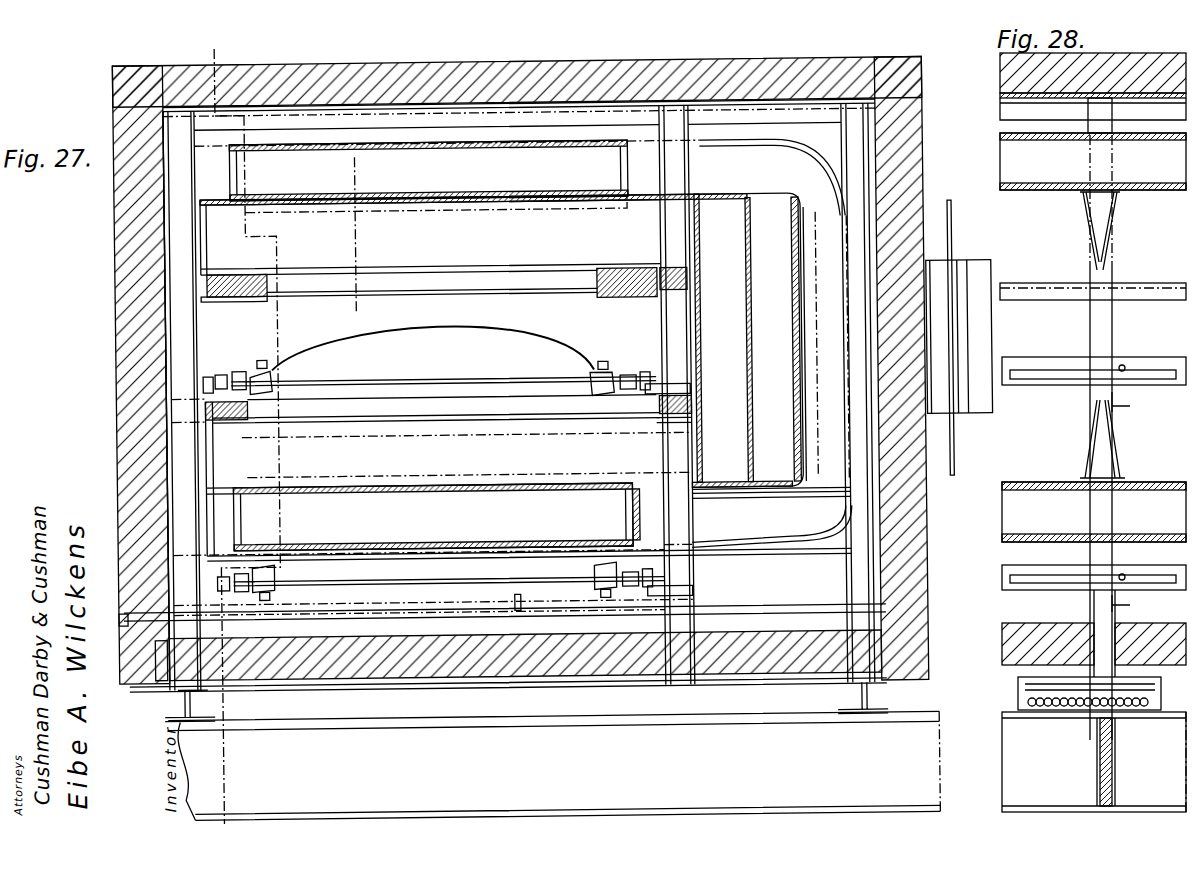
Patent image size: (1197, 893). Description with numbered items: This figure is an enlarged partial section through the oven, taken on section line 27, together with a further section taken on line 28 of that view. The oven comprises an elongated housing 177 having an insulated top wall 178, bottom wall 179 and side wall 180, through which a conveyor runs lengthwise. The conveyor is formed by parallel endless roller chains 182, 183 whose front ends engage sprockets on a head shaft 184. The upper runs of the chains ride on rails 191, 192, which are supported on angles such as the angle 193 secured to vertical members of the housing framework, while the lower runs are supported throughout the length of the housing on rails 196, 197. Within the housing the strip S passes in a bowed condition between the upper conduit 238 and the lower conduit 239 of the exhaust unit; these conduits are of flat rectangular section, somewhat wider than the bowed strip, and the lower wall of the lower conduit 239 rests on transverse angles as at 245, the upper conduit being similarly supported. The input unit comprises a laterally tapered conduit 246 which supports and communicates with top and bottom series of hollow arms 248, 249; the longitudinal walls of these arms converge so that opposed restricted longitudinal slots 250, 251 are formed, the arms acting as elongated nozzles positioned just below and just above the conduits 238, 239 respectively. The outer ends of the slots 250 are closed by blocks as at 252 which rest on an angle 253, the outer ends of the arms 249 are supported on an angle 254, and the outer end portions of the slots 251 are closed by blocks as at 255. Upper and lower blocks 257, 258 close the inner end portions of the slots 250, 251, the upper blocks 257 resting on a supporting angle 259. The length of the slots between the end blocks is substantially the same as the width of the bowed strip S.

In FIG. 27, the section line 27 is at (338, 174).
In FIG. 27, the section line 28 is at (227, 50).
In FIG. 27, the housing 177 is at (112, 253).
In FIG. 27, the top wall 178 is at (597, 68).
In FIG. 28, the top wall 178 is at (1005, 85).
In FIG. 27, the bottom wall 179 is at (660, 658).
In FIG. 27, the side wall 180 is at (137, 352).
In FIG. 27, the endless roller chain 182 is at (223, 374).
In FIG. 27, the endless roller chain 183 is at (642, 375).
In FIG. 27, the head shaft 184 is at (911, 534).
In FIG. 27, the rail 191 is at (249, 406).
In FIG. 28, the rail 191 is at (1150, 356).
In FIG. 27, the rail 192 is at (660, 403).
In FIG. 27, the angle 193 is at (213, 372).
In FIG. 28, the angle 193 is at (1050, 356).
In FIG. 27, the rail 196 is at (230, 604).
In FIG. 28, the rail 196 is at (1147, 572).
In FIG. 27, the rail 197 is at (688, 594).
In FIG. 27, the upper conduit 238 is at (520, 195).
In FIG. 28, the upper conduit 238 is at (1000, 158).
In FIG. 27, the lower conduit 239 is at (317, 550).
In FIG. 27, the transverse angle 245 is at (339, 552).
In FIG. 27, the conduit 246 is at (706, 324).
In FIG. 27, the hollow arm 248 is at (255, 219).
In FIG. 28, the hollow arm 248 is at (1086, 205).
In FIG. 27, the hollow arm 249 is at (508, 483).
In FIG. 28, the hollow arm 249 is at (1118, 462).
In FIG. 27, the longitudinal slot 250 is at (473, 282).
In FIG. 27, the longitudinal slot 251 is at (345, 414).
In FIG. 27, the block 252 is at (258, 295).
In FIG. 27, the angle 253 is at (234, 313).
In FIG. 28, the angle 253 is at (1137, 286).
In FIG. 27, the angle 254 is at (221, 496).
In FIG. 27, the block 255 is at (240, 414).
In FIG. 27, the upper block 257 is at (607, 298).
In FIG. 27, the lower block 258 is at (664, 414).
In FIG. 27, the supporting angle 259 is at (690, 290).
In FIG. 28, the supporting angle 259 is at (1135, 488).
In FIG. 27, the strip S is at (432, 340).